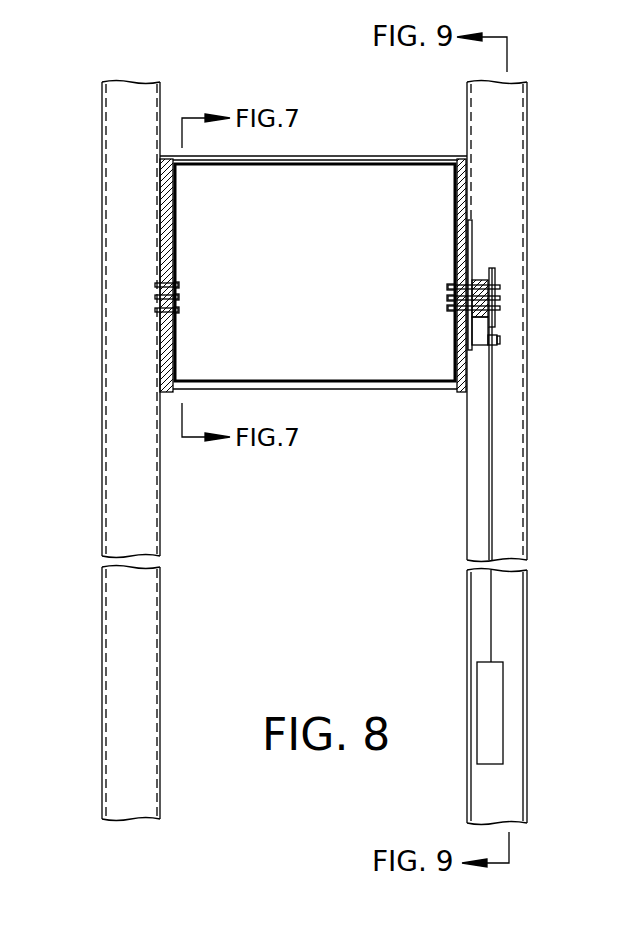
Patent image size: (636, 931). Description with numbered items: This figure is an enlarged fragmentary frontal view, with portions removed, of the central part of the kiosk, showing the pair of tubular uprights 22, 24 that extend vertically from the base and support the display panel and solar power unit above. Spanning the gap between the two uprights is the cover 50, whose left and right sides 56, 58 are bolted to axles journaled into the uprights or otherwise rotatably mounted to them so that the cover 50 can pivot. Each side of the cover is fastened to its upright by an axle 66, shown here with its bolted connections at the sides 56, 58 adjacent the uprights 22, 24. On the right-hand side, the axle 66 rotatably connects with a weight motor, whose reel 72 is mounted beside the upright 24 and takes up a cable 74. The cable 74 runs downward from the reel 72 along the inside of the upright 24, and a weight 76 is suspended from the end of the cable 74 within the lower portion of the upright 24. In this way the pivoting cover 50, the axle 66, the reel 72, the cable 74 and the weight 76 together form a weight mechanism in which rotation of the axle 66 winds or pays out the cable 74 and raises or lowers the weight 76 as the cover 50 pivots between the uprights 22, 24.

The tubular upright 22 is at (102, 604).
The tubular upright 24 is at (527, 610).
The cover 50 is at (359, 158).
The side of the cover 56 is at (163, 209).
The side of the cover 58 is at (478, 270).
The axle 66 is at (160, 330).
The reel 72 is at (497, 292).
The cable 74 is at (491, 435).
The weight 76 is at (496, 705).